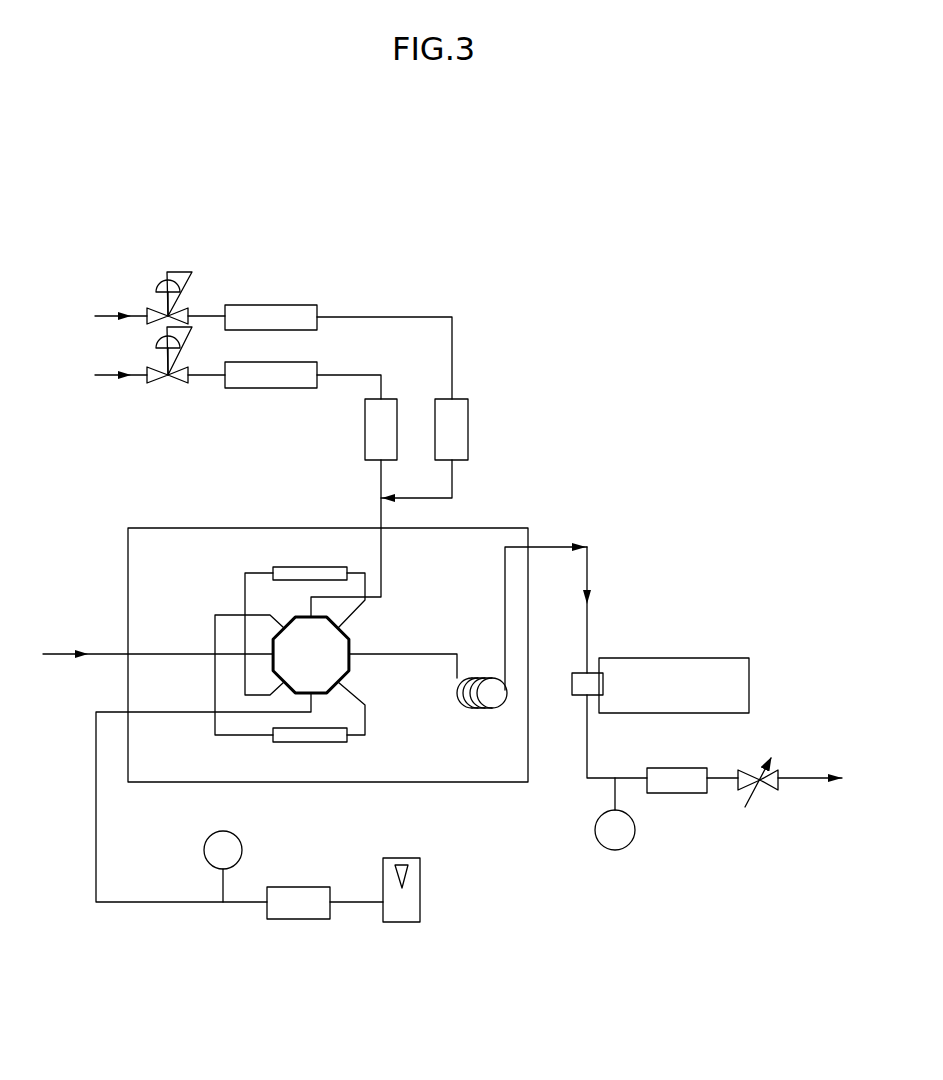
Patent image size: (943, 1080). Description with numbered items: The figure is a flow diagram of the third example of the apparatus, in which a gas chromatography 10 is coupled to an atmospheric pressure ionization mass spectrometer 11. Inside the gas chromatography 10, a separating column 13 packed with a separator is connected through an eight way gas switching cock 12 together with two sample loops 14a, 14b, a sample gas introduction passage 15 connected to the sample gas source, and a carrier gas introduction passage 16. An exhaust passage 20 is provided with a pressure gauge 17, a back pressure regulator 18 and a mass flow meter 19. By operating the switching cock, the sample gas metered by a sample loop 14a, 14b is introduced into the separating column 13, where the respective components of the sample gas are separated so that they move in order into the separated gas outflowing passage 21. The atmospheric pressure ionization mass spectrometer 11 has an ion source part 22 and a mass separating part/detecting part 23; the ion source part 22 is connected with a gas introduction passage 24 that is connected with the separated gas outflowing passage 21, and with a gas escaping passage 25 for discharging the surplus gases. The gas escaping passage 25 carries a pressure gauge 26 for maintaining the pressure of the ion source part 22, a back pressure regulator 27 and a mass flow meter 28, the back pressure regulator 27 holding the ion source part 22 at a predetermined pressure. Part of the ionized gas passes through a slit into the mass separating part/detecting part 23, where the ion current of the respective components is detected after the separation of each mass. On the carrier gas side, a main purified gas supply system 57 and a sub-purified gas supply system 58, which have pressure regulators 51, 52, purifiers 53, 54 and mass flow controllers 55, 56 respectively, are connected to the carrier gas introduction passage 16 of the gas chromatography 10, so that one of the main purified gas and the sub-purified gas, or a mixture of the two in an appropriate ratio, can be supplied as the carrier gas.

The gas chromatography 10 is at (171, 514).
The atmospheric pressure ionization mass spectrometer 11 is at (762, 675).
The 8 way gas switching cock 12 is at (348, 640).
The separating column 13 is at (483, 710).
The sample loop 14a is at (292, 567).
The sample loop 14b is at (298, 742).
The sample gas introduction passage 15 is at (173, 653).
The carrier gas introduction passage 16 is at (382, 553).
The pressure gauge 17 is at (205, 845).
The back pressure regulator 18 is at (308, 885).
The mass flow meter 19 is at (405, 858).
The exhaust passage 20 is at (203, 712).
The separated gas outflowing passage 21 is at (505, 595).
The ion source part 22 is at (577, 698).
The mass separating part/detecting part 23 is at (673, 657).
The gas introduction passage 24 is at (590, 572).
The gas escaping passage 25 is at (588, 758).
The pressure gauge 26 is at (600, 845).
The back pressure regulator 27 is at (677, 795).
The mass flow meter 28 is at (770, 793).
The pressure regulator 51 is at (155, 385).
The pressure regulator 52 is at (187, 310).
The purifier 53 is at (248, 388).
The purifier 54 is at (270, 305).
The mass flow controller 55 is at (363, 443).
The mass flow controller 56 is at (468, 428).
The main purified gas supply system 57 is at (112, 402).
The sub-purified gas supply system 58 is at (112, 291).